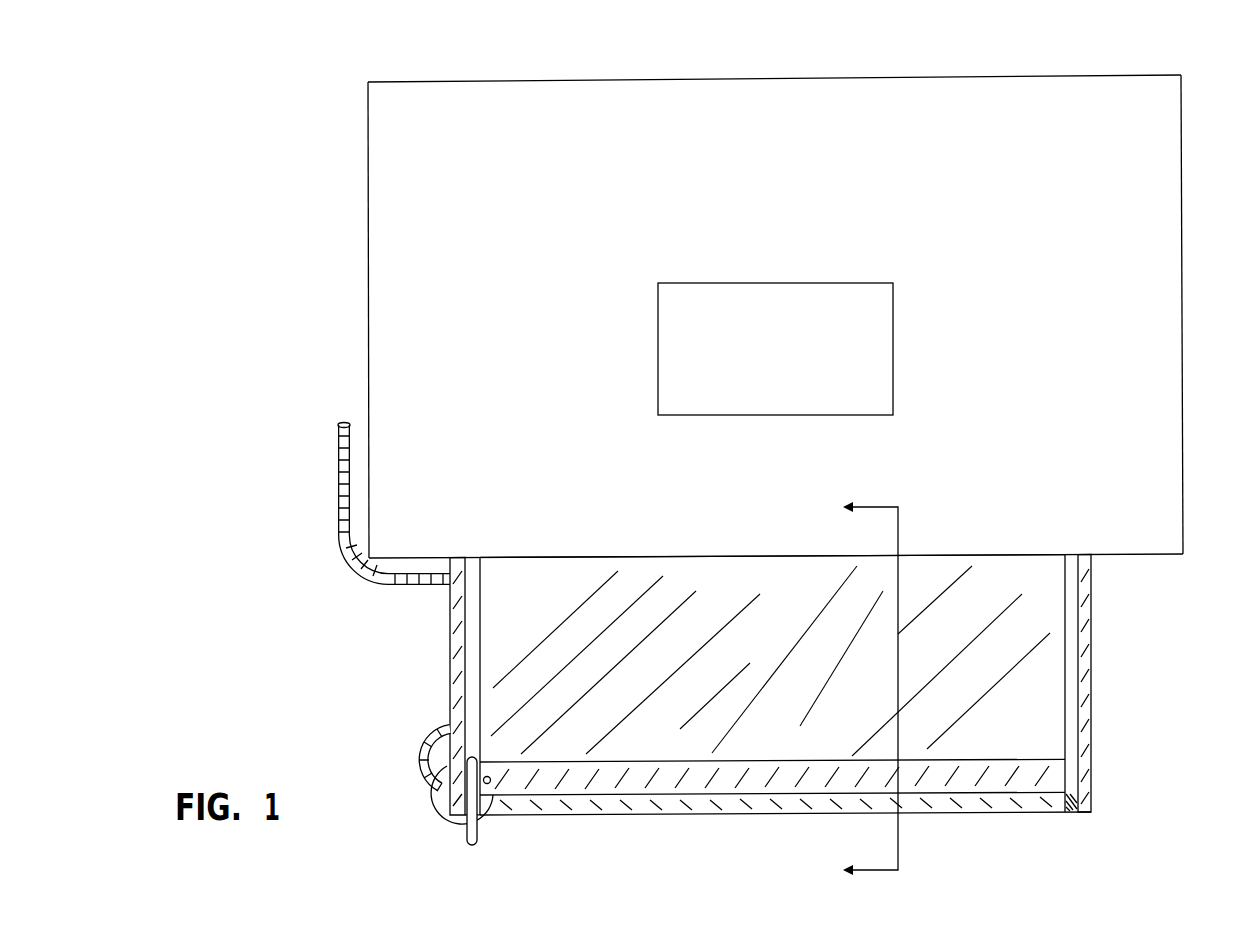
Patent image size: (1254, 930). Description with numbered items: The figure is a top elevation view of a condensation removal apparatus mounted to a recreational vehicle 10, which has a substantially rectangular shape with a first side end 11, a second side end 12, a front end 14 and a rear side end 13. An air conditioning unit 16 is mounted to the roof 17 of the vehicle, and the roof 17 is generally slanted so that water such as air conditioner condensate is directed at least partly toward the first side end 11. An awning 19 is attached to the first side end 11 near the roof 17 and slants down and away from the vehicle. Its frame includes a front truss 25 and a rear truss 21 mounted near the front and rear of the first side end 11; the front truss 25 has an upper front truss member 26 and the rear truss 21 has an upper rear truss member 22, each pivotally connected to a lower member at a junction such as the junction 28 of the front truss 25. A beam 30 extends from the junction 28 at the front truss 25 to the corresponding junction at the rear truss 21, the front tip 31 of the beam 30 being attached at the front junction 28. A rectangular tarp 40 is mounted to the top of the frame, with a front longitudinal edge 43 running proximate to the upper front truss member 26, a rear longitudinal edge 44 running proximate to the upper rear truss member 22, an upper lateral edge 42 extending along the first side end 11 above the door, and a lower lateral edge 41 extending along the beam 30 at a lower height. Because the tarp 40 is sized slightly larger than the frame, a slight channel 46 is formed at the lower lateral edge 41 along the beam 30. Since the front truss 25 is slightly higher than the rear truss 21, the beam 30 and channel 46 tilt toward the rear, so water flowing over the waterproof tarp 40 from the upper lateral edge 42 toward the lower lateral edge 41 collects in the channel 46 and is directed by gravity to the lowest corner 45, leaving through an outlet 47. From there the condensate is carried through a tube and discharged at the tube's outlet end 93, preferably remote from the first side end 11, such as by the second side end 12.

The recreational vehicle 10 is at (238, 75).
The first side end 11 is at (775, 556).
The second side end 12 is at (868, 78).
The rear side end 13 is at (1181, 393).
The front end 14 is at (370, 291).
The air conditioning unit 16 is at (786, 364).
The roof 17 is at (543, 249).
The awning 19 is at (1162, 713).
The rear truss 21 is at (406, 706).
The upper rear truss member 22 is at (458, 678).
The front truss 25 is at (1096, 605).
The upper front truss member 26 is at (1092, 673).
The junction 28 is at (1092, 787).
The beam 30 is at (688, 811).
The front tip 31 is at (1070, 808).
The tarp 40 is at (738, 674).
The lower lateral edge 41 is at (653, 797).
The upper lateral edge 42 is at (733, 559).
The front longitudinal edge 43 is at (1063, 730).
The rear longitudinal edge 44 is at (492, 618).
The lowest corner 45 is at (490, 783).
The channel 46 is at (746, 780).
The outlet 47 is at (478, 796).
The outlet end 93 is at (343, 524).